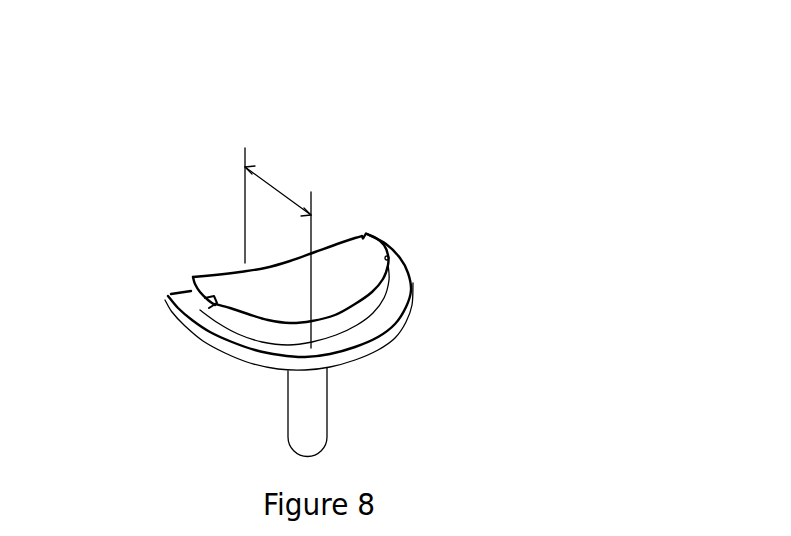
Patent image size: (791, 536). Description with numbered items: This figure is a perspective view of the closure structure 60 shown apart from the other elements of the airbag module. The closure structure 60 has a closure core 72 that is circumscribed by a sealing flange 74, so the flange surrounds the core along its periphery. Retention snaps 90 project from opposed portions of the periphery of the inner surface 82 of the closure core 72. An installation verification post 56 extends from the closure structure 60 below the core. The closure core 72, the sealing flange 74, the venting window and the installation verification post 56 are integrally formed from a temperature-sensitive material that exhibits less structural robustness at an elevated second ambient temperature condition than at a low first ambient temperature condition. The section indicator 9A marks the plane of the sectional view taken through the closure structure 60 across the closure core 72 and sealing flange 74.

The section line 9A is at (440, 60).
The installation verification post 56 is at (322, 413).
The closure structure 60 is at (495, 200).
The closure core 72 is at (274, 186).
The sealing flange 74 is at (415, 279).
The inner surface 82 is at (349, 273).
The retention snaps 90 is at (180, 296).